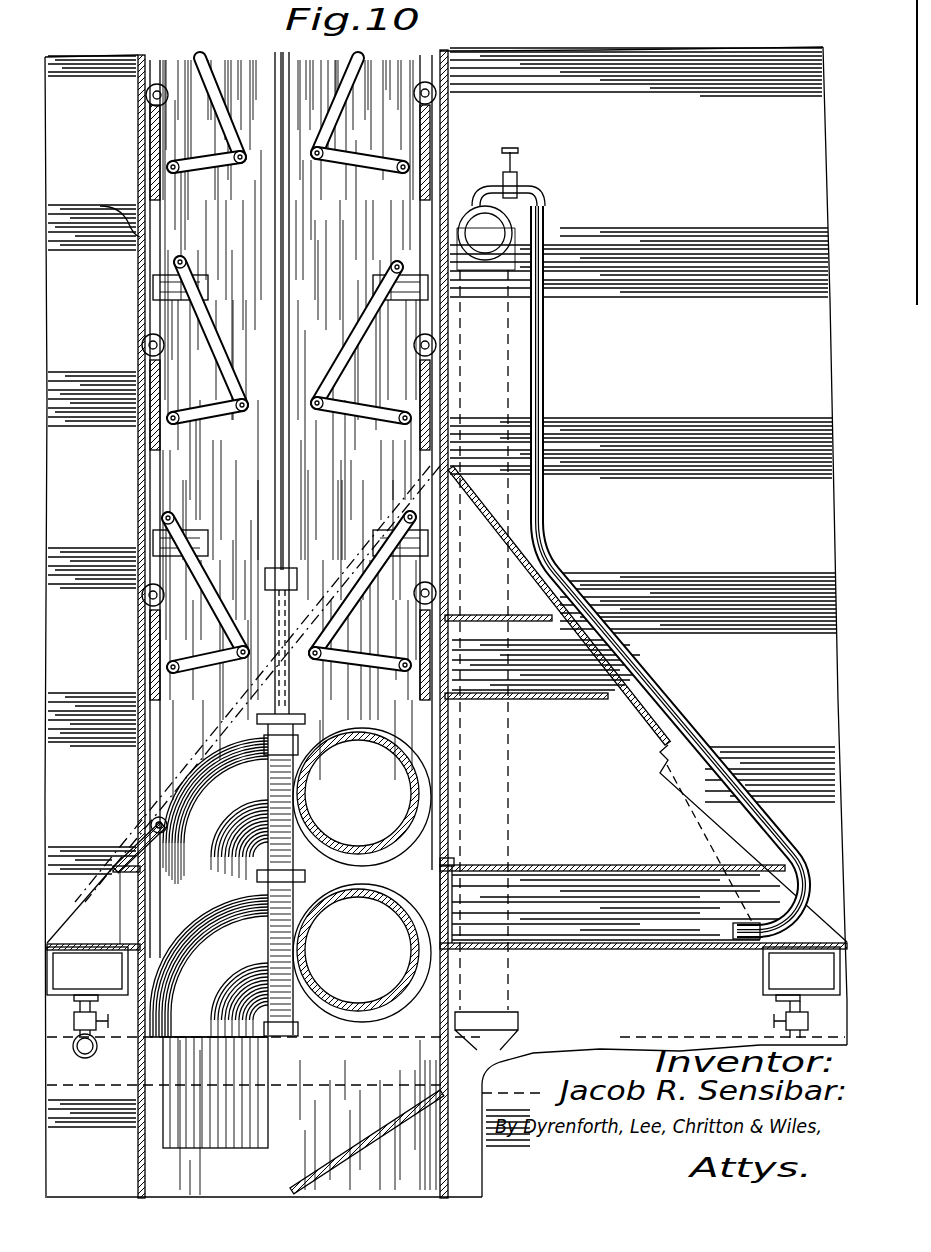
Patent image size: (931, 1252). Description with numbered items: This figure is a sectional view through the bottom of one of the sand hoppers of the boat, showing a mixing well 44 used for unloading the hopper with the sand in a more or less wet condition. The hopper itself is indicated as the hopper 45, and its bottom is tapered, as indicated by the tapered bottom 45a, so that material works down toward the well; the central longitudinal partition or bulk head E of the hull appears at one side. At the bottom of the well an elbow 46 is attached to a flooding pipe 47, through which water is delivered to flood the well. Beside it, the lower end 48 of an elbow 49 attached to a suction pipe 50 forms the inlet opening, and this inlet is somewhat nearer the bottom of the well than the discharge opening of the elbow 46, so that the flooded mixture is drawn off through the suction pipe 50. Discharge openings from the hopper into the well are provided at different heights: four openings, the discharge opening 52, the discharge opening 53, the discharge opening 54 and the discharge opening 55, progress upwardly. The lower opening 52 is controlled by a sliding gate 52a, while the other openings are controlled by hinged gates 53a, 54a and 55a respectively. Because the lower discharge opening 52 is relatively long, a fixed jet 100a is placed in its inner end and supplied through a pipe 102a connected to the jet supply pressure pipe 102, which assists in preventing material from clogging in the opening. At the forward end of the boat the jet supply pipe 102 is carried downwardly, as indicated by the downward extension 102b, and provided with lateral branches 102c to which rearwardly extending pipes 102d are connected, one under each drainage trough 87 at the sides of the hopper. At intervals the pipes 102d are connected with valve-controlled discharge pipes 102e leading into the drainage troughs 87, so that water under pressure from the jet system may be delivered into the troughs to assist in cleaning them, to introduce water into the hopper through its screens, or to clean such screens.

The mixing well 44 is at (218, 474).
The hopper 45 is at (76, 356).
The tapered bottom of the hopper 45a is at (130, 855).
The elbow 46 is at (209, 992).
The flooding pipe 47 is at (360, 992).
The lower end of the suction elbow 48 is at (212, 1138).
The elbow 49 is at (232, 808).
The suction pipe 50 is at (348, 842).
The discharge opening 52 is at (572, 897).
The sliding gate 52a is at (140, 897).
The discharge opening 53 is at (150, 630).
The hinged gate 53a is at (150, 646).
The discharge opening 54 is at (150, 383).
The hinged gate 54a is at (150, 418).
The discharge opening 55 is at (150, 140).
The hinged gate 55a is at (150, 163).
The drainage trough 87 is at (85, 990).
The fixed jet 100a is at (733, 932).
The jet supply pressure pipe 102 is at (488, 262).
The pipe 102a is at (532, 322).
The downward extension of the jet supply pipe 102b is at (508, 778).
The lateral branch 102c is at (305, 1090).
The rearwardly extending pipe 102d is at (74, 1060).
The valve-controlled discharge pipe 102e is at (95, 1008).
The central longitudinal partition or bulk head E is at (111, 214).